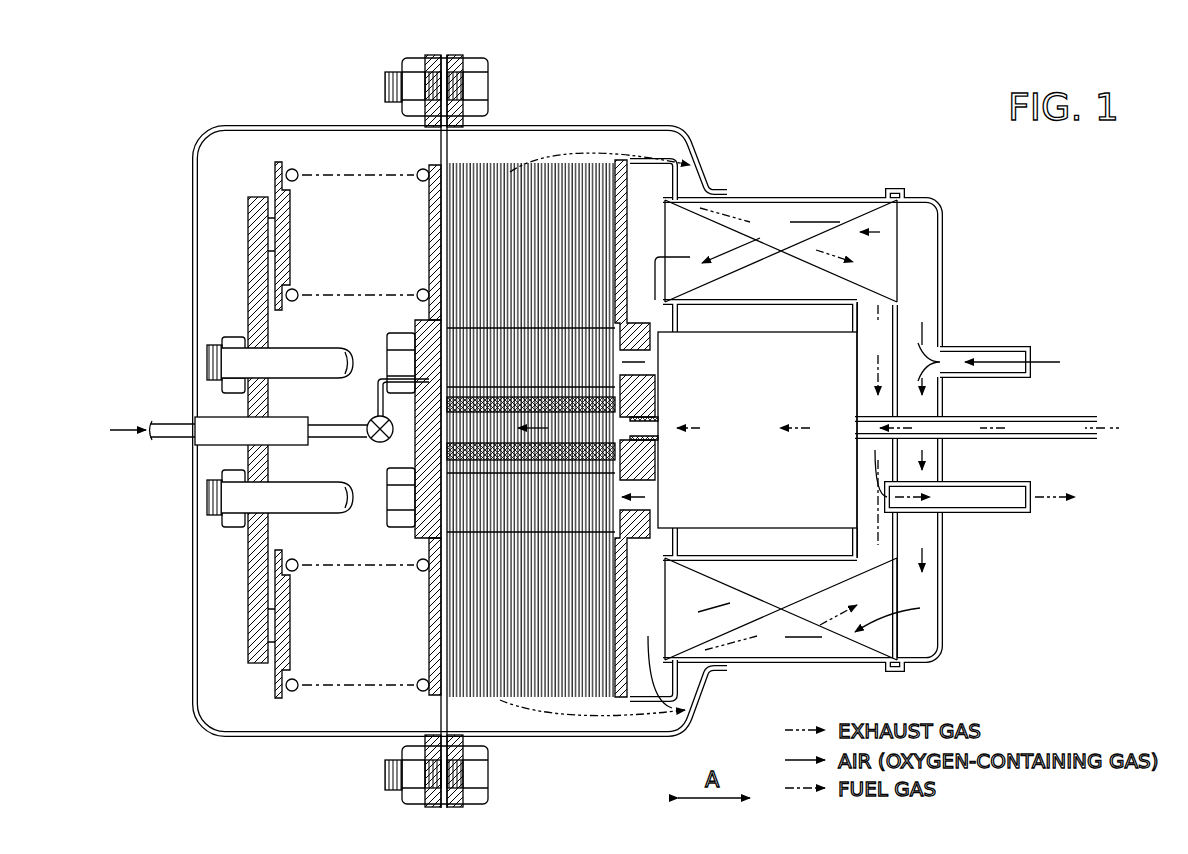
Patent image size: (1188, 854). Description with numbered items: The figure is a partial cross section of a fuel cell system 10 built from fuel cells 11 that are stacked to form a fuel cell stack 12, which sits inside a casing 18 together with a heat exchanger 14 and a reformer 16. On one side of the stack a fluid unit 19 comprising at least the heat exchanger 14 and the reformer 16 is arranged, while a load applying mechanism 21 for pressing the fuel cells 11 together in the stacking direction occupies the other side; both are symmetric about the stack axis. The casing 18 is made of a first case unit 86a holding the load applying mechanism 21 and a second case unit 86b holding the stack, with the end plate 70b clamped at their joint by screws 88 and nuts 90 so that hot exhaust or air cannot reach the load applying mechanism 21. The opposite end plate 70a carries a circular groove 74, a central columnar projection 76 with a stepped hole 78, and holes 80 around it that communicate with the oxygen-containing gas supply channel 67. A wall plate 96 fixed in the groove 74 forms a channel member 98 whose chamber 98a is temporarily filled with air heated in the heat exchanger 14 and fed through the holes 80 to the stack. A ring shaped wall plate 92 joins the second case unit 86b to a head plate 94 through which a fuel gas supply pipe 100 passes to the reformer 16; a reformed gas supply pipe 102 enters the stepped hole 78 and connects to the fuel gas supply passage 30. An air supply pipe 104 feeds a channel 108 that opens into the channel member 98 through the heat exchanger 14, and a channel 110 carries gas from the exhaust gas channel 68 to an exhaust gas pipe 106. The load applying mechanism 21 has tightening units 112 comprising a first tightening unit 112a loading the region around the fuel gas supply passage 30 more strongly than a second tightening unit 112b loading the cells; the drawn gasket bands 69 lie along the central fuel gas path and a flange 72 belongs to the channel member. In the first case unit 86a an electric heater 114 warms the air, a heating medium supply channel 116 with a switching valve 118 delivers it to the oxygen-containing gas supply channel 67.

The fuel cell system 10 is at (1034, 168).
The fuel cells 11 is at (505, 703).
The fuel cell stack 12 is at (582, 154).
The heat exchanger 14 is at (865, 220).
The reformer 16 is at (783, 345).
The casing 18 is at (725, 187).
The fluid unit 19 is at (887, 144).
The load applying mechanism 21 is at (398, 600).
The fuel gas supply passage 30 is at (415, 448).
The oxygen-containing gas supply channel 67 is at (625, 365).
The exhaust gas channel 68 is at (592, 704).
The fuel gas supply passage 69 is at (466, 440).
The end plate 70a is at (625, 233).
The end plate 70b is at (428, 242).
The partition plate 72 is at (695, 718).
The circular groove 74 is at (668, 739).
The columnar projection 76 is at (658, 440).
The stepped hole 78 is at (660, 452).
The holes 80 is at (650, 505).
The first case unit 86a is at (290, 127).
The second case unit 86b is at (555, 127).
The screws 88 is at (486, 86).
The nuts 90 is at (385, 85).
The wall plate 92 is at (768, 666).
The head plate 94 is at (944, 578).
The wall plate 96 is at (680, 180).
The channel member 98 is at (690, 160).
The chamber 98a is at (700, 680).
The fuel gas supply pipe 100 is at (1064, 417).
The reformed gas supply pipe 102 is at (660, 423).
The air supply pipe 104 is at (978, 349).
The exhaust gas pipe 106 is at (992, 513).
The channel 108 is at (880, 232).
The channel 110 is at (810, 608).
The terminal bolts 112 is at (280, 432).
The first tightening unit 112a is at (416, 543).
The second tightening unit 112b is at (272, 538).
The electric heater 114 is at (290, 433).
The heating medium supply channel 116 is at (340, 439).
The switching valve 118 is at (367, 422).